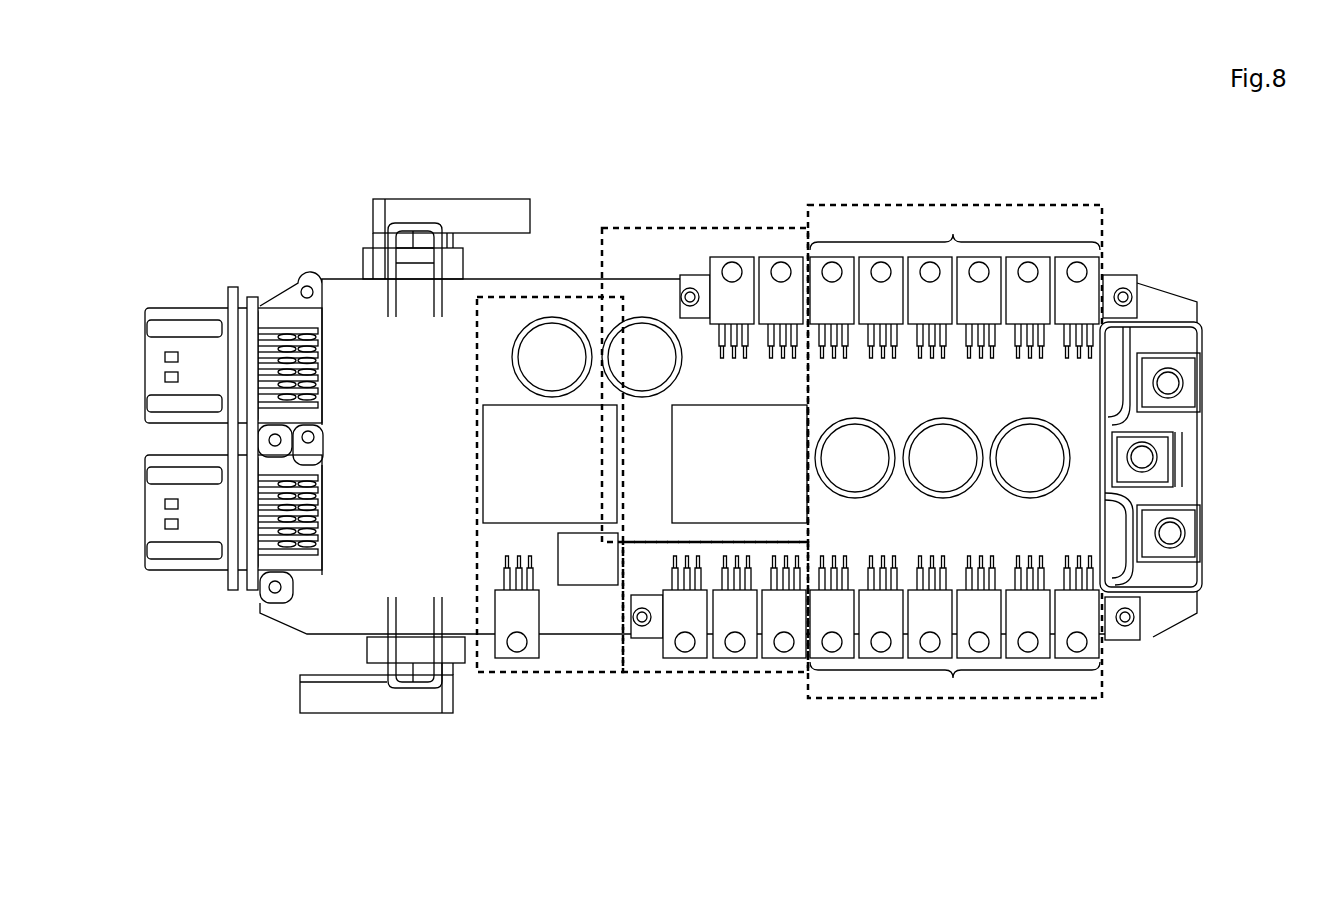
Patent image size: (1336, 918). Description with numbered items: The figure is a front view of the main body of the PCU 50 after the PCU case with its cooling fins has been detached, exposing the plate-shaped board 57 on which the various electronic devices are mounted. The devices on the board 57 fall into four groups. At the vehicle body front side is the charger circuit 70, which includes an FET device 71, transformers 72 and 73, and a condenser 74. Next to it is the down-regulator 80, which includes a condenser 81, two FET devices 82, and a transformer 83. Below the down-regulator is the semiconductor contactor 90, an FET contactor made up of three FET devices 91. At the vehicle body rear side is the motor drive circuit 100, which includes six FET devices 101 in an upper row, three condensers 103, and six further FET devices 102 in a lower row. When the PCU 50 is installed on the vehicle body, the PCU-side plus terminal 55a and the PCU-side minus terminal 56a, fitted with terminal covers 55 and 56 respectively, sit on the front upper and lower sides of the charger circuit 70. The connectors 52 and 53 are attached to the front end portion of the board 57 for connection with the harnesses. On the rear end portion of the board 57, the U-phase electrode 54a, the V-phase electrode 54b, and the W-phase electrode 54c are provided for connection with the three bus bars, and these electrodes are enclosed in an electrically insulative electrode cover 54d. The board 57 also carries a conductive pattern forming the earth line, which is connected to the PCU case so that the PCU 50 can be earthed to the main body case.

The PCU 50 is at (606, 104).
The connector 52 is at (147, 362).
The connector 53 is at (147, 518).
The U-phase electrode 54a is at (1185, 383).
The V-phase electrode 54b is at (1170, 457).
The W-phase electrode 54c is at (1185, 530).
The electrode cover 54d is at (1191, 366).
The terminal cover 55 is at (452, 213).
The PCU-side plus terminal 55a is at (405, 232).
The terminal cover 56 is at (365, 705).
The PCU-side minus terminal 56a is at (413, 690).
The board 57 is at (307, 603).
The charger circuit 70 is at (550, 470).
The FET device 71 is at (505, 653).
The transformer 72 is at (588, 574).
The transformer 73 is at (500, 430).
The condenser 74 is at (560, 358).
The down-regulator 80 is at (705, 311).
The condenser 81 is at (640, 357).
The FET device 82 is at (735, 262).
The transformer 83 is at (697, 437).
The semiconductor contactor 90 is at (715, 681).
The FET device 91 is at (673, 650).
The motor drive circuit 100 is at (955, 460).
The FET device 101 is at (953, 232).
The FET device 102 is at (953, 690).
The condenser 103 is at (1030, 446).